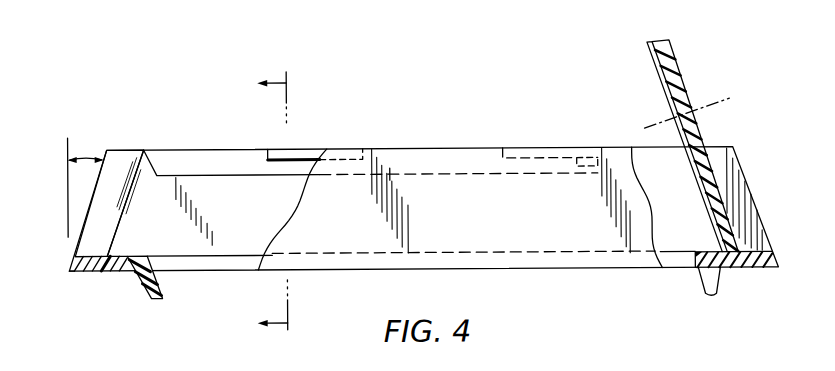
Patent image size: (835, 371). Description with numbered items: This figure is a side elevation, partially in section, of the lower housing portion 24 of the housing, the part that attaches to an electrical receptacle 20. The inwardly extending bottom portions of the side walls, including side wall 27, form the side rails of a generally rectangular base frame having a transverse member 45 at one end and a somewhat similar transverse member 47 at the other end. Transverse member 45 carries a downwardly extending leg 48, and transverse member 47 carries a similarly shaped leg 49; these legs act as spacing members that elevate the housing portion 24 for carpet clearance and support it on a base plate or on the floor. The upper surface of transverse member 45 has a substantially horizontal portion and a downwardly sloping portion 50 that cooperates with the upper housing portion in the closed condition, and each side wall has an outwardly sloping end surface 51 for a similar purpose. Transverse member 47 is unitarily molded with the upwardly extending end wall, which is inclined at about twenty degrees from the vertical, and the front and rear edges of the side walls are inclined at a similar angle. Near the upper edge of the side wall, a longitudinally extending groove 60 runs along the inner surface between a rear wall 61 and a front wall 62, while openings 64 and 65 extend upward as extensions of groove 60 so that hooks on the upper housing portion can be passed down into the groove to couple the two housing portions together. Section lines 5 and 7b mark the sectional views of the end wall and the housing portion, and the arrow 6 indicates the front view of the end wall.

The section line 5-5 through blade 5 is at (725, 97).
The view direction 6 is at (762, 152).
The section line 7b- 7b is at (289, 204).
The receptacle 20 is at (90, 155).
The lower housing portion 24 is at (400, 125).
The side wall 27 is at (448, 222).
The transverse member 45 is at (82, 270).
The transverse member 47 is at (750, 270).
The leg 48 is at (148, 288).
The leg 49 is at (702, 292).
The downwardly sloping portion 50 is at (83, 253).
The outwardly sloping surface 51 is at (100, 201).
The longitudinally extending groove 60 is at (290, 166).
The rear wall 61 is at (152, 164).
The front wall 62 is at (578, 158).
The opening 64 is at (247, 159).
The opening 65 is at (481, 158).